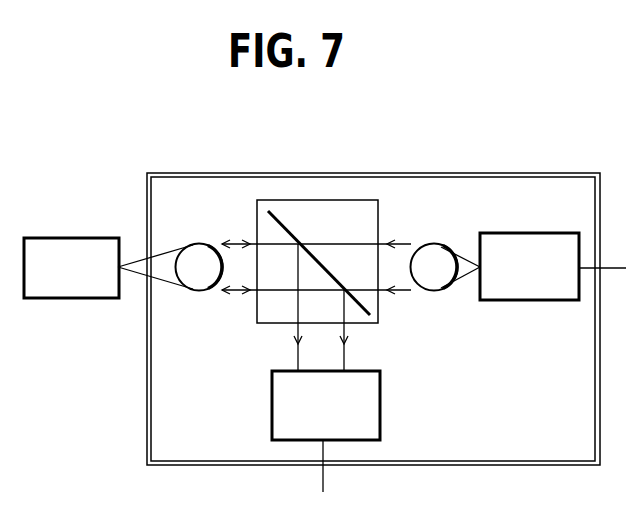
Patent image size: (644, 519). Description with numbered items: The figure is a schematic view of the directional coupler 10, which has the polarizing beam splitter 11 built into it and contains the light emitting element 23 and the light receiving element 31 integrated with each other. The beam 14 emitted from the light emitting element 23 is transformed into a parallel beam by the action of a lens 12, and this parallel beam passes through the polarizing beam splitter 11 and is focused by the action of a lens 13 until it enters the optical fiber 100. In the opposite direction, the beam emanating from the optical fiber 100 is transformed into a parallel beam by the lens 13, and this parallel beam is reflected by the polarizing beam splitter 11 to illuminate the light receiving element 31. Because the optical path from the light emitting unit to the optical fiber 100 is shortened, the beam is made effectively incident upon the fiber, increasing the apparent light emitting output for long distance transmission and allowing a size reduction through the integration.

The directional coupler 10 is at (385, 173).
The polarizing beam splitter 11 is at (272, 200).
The lens 12 is at (446, 252).
The lens 13 is at (192, 252).
The beam 14 is at (458, 278).
The light emitting element 23 is at (518, 233).
The light receiving element 31 is at (381, 417).
The optical fiber 100 is at (72, 299).